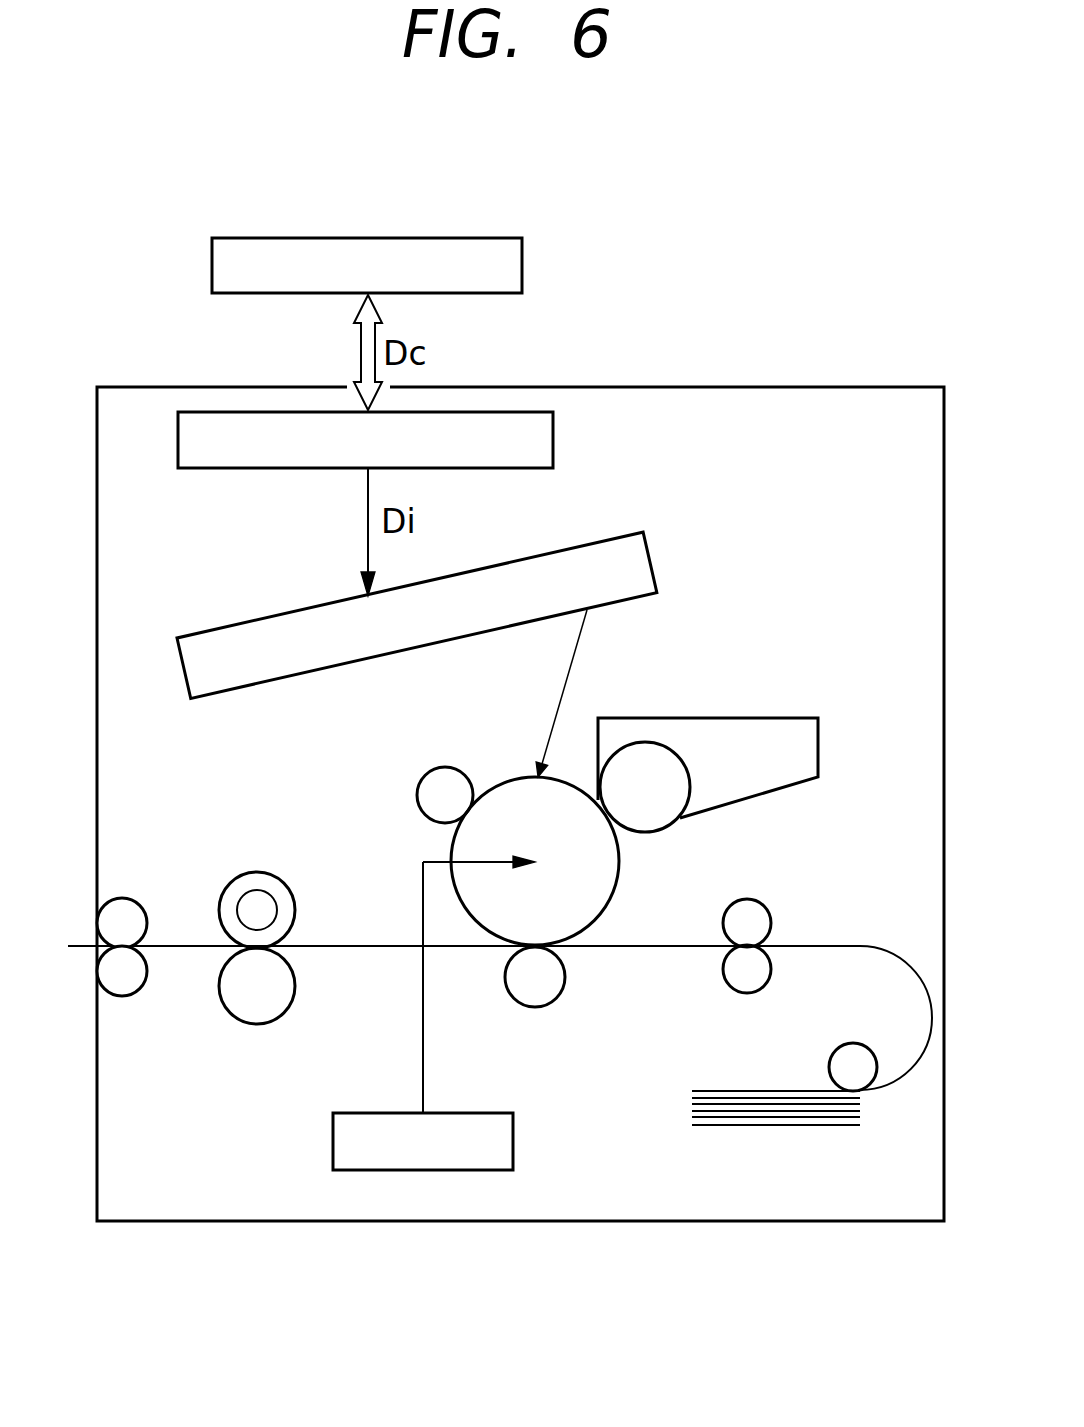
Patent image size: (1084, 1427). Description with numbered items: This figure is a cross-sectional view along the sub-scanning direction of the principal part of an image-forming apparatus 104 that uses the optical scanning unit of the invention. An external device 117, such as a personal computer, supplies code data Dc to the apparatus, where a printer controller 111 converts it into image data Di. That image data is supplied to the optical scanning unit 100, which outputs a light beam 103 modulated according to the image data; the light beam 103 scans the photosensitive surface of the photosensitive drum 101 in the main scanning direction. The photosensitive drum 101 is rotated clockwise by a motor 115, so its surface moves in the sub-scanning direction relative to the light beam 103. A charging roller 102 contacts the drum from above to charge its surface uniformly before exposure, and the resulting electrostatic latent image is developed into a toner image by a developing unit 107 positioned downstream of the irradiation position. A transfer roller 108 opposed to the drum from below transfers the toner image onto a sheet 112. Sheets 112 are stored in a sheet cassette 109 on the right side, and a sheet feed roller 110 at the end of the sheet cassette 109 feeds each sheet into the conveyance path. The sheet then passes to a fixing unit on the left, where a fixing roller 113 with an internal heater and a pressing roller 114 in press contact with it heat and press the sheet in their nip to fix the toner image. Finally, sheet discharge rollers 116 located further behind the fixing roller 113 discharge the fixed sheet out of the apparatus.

The optical scanning unit 100 is at (242, 623).
The photosensitive drum 101 is at (607, 883).
The charging roller 102 is at (437, 771).
The light beam 103 is at (568, 675).
The image-forming apparatus 104 is at (712, 387).
The developing unit 107 is at (742, 725).
The transfer roller 108 is at (555, 975).
The sheet cassette 109 is at (770, 1128).
The sheet feed roller 110 is at (858, 1045).
The printer controller 111 is at (555, 441).
The sheet 112 is at (385, 945).
The fixing roller 113 is at (270, 883).
The pressing roller 114 is at (253, 1017).
The motor 115 is at (467, 1112).
The sheet discharge rollers 116 is at (128, 908).
The external device 117 is at (485, 237).